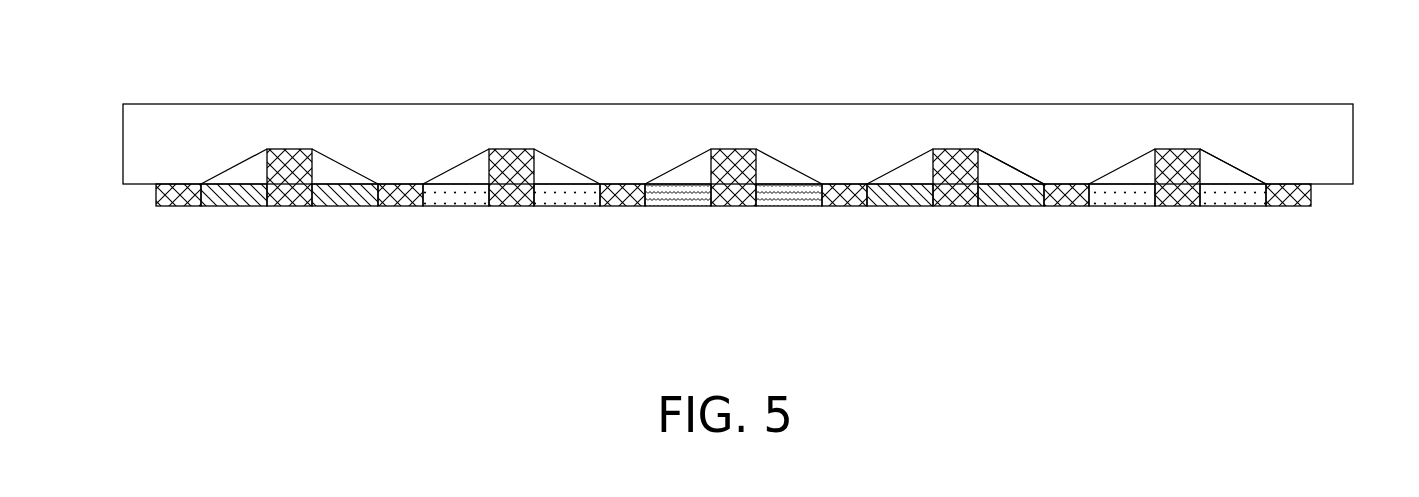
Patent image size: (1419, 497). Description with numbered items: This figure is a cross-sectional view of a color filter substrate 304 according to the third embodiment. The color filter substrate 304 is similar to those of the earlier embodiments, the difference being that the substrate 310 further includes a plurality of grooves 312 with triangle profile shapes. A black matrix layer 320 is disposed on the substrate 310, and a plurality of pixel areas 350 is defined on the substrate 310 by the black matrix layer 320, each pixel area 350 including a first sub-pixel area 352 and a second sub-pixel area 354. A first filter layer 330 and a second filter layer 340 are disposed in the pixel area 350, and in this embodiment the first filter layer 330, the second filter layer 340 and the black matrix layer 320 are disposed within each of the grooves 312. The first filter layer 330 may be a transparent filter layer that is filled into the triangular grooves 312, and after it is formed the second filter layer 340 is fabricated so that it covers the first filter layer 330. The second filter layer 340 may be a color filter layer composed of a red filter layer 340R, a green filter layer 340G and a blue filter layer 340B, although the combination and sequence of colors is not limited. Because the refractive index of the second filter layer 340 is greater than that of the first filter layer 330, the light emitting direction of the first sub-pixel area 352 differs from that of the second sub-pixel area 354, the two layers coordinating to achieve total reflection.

The color filter substrate 304 is at (1392, 350).
The substrate 310 is at (153, 138).
The grooves 312 is at (1017, 158).
The black matrix layer 320 is at (293, 195).
The first filter layer 330 is at (1217, 172).
The second filter layer 340 is at (733, 275).
The blue filter layer 340B is at (787, 205).
The green filter layer 340G is at (1017, 193).
The red filter layer 340R is at (1171, 240).
The pixel area 350 is at (511, 273).
The first sub-pixel area 352 is at (566, 230).
The second sub-pixel area 354 is at (465, 238).